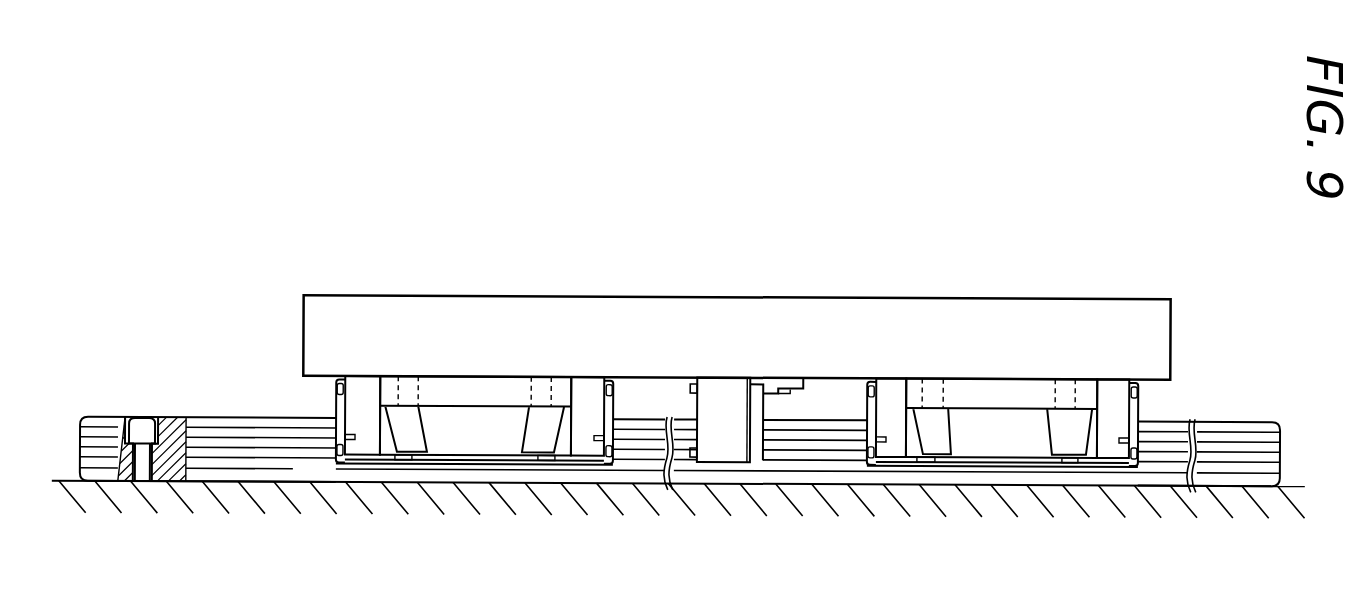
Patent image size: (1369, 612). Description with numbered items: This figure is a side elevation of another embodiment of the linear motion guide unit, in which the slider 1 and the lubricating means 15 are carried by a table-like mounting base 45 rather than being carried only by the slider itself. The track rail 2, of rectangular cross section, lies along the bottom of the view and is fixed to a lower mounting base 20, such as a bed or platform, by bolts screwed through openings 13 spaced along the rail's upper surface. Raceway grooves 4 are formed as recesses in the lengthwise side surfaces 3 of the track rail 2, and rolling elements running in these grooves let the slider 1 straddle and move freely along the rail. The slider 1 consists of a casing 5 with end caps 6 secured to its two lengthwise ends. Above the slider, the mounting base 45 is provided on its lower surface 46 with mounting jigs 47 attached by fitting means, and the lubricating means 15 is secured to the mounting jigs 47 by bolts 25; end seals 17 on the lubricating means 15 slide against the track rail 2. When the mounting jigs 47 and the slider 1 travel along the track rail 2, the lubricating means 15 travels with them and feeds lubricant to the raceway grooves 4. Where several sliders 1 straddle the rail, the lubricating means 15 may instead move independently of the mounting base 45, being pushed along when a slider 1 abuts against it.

The slider 1 is at (450, 452).
The track rail 2 is at (212, 421).
The lengthwise side surfaces 3 is at (256, 462).
The raceway grooves 4 is at (270, 437).
The casing 5 is at (488, 444).
The end caps 6 is at (367, 438).
The openings 13 is at (143, 458).
The lubricating means 15 is at (727, 463).
The end seals 17 is at (340, 428).
The mounting base 20 is at (652, 505).
The bolts 25 is at (691, 384).
The mounting base 45 is at (873, 330).
The lower surface 46 is at (664, 378).
The mounting jigs 47 is at (793, 383).